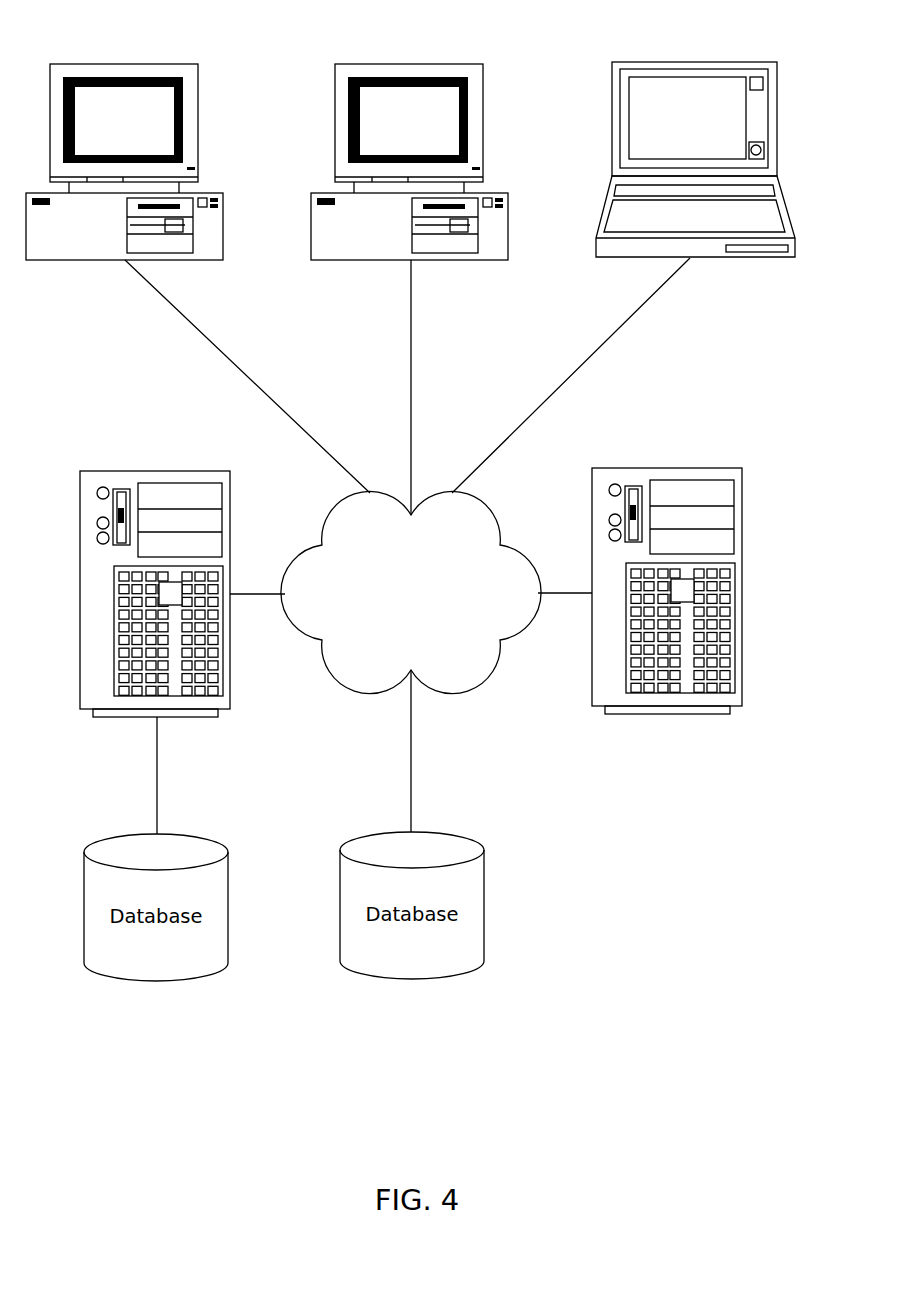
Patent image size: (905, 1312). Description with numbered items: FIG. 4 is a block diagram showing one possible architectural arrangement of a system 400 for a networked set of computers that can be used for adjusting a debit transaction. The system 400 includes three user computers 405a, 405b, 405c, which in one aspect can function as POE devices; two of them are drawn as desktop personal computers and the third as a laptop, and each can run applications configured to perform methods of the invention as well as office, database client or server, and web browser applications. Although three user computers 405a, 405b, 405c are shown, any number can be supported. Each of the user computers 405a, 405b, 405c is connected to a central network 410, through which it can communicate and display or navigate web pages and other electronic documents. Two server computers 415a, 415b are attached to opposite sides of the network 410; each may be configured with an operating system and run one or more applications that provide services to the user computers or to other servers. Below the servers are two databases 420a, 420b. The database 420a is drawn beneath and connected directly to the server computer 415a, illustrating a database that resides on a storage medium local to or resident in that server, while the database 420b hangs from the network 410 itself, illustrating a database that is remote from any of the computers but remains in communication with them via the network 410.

The system 400 is at (410, 542).
The user computer 405a is at (150, 163).
The user computer 405b is at (384, 162).
The user computer 405c is at (677, 159).
The network 410 is at (411, 612).
The server computer 415a is at (129, 594).
The server computer 415b is at (692, 591).
The database 420a is at (158, 929).
The database 420b is at (414, 928).